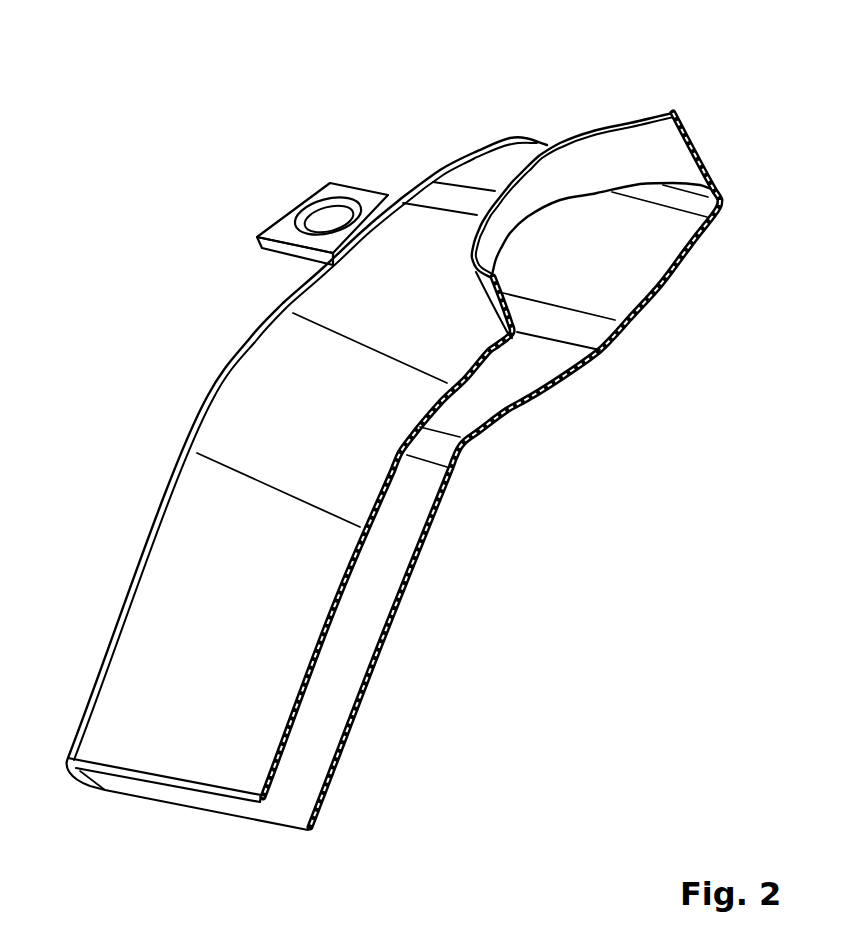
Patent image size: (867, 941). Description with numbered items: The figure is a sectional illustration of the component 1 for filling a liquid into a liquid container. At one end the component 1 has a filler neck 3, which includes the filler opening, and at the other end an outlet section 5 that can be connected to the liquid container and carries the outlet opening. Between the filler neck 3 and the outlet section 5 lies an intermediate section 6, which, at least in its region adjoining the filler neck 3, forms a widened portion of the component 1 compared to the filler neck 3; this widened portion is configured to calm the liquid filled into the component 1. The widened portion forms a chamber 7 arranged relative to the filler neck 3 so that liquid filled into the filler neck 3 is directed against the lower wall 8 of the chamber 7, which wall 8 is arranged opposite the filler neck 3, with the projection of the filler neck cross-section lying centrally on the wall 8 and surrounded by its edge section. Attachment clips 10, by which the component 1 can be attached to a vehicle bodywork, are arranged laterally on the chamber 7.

The component 1 is at (223, 158).
The filler neck 3 is at (628, 148).
The outlet section 5 is at (193, 567).
The intermediate section 6 is at (354, 282).
The chamber 7 is at (487, 173).
The lower wall 8 is at (591, 254).
The attachment clips 10 is at (370, 203).